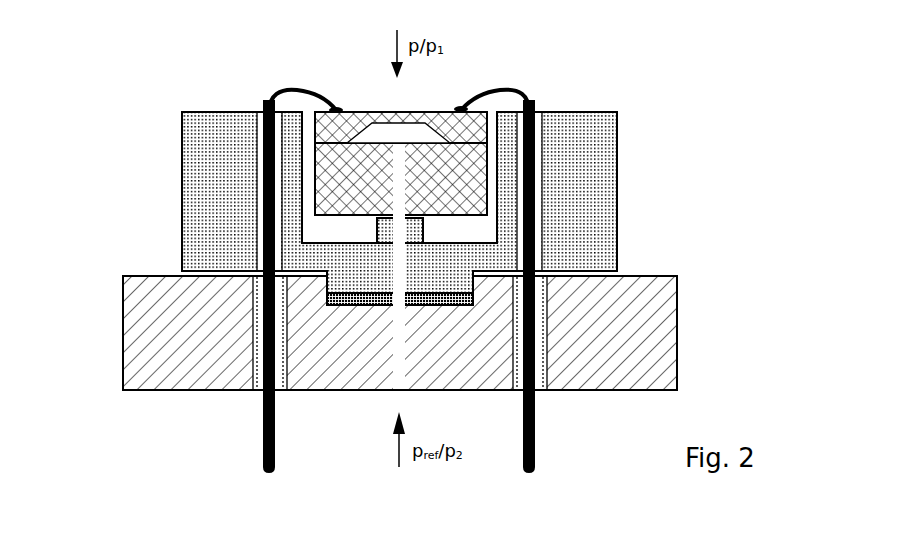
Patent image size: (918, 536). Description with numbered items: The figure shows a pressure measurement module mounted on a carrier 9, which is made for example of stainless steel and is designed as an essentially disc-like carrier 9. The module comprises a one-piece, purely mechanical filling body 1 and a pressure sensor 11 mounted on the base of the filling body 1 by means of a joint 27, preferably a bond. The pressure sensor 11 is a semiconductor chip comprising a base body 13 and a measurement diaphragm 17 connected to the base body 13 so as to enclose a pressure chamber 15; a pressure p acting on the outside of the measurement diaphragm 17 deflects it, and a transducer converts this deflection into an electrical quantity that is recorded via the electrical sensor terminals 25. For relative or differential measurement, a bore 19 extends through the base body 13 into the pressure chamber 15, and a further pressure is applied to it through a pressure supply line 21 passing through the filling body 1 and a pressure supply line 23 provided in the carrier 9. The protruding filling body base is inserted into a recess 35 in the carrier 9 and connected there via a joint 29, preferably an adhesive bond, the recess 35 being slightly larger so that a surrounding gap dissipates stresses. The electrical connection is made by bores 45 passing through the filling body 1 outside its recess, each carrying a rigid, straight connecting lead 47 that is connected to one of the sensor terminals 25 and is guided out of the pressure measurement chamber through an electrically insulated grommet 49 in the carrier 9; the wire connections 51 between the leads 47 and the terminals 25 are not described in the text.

The filling body 1 is at (208, 157).
The carrier 9 is at (155, 318).
The pressure sensor 11 is at (380, 103).
The base body 13 is at (458, 172).
The pressure chamber 15 is at (398, 133).
The measurement diaphragm 17 is at (400, 114).
The bore 19 is at (398, 182).
The pressure supply line 21 is at (400, 258).
The pressure supply line 23 is at (397, 352).
The sensor terminals 25 is at (333, 106).
The joint 27 is at (413, 223).
The joint 29 is at (360, 305).
The recess 35 is at (473, 295).
The bores 45 is at (263, 157).
The connecting leads 47 is at (262, 130).
The electrically insulated grommet 49 is at (260, 353).
The bond wires 51 is at (287, 92).